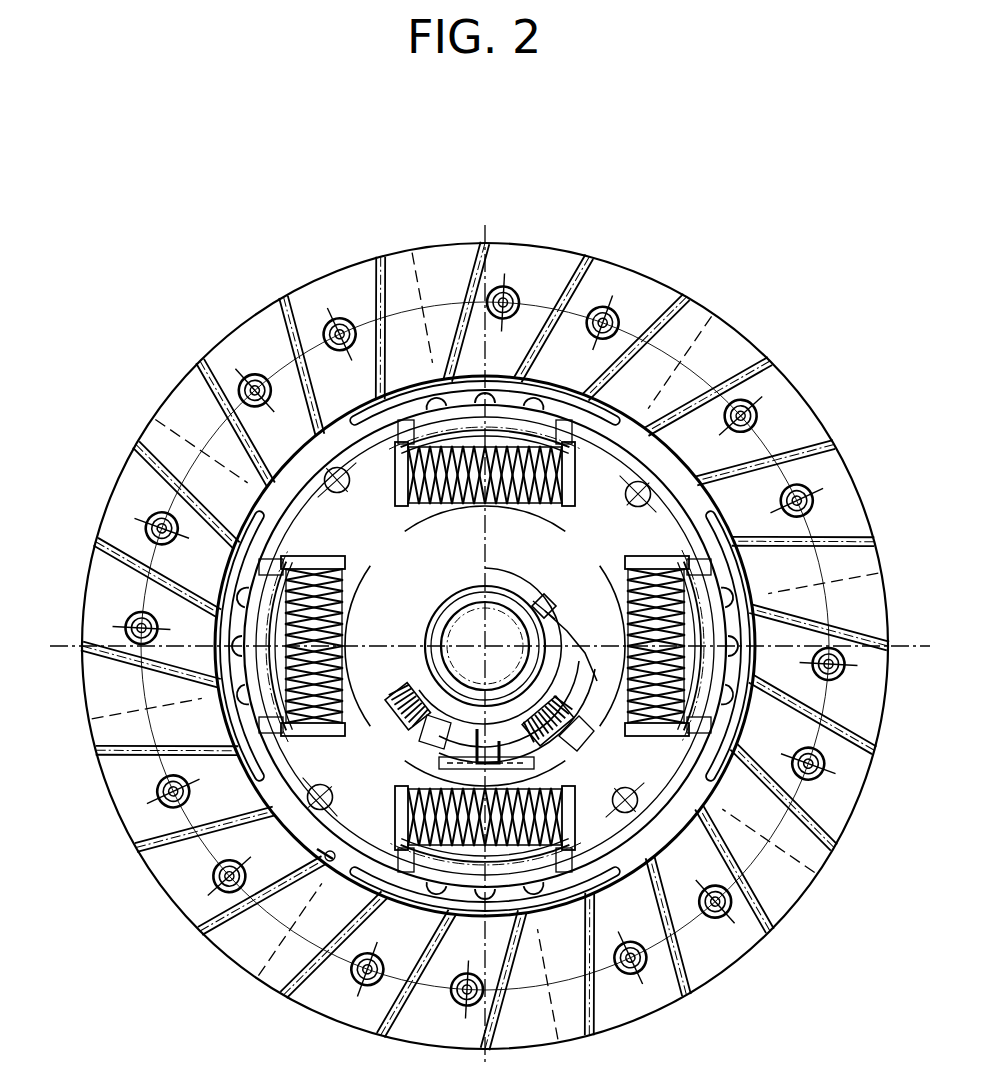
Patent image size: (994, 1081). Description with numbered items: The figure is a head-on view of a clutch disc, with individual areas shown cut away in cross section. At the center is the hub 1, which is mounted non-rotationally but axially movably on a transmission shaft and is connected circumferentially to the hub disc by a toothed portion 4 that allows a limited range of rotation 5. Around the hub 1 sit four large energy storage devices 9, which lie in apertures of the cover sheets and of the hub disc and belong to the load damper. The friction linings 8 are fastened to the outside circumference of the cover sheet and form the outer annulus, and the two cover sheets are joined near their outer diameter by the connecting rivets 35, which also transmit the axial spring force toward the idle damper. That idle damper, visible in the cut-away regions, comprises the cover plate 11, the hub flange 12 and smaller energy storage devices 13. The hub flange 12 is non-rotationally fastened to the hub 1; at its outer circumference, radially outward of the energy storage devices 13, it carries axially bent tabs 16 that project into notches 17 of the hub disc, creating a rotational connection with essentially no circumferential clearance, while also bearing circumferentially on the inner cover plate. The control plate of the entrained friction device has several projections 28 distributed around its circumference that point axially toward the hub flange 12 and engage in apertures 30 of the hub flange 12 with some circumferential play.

The hub 1 is at (458, 606).
The toothed portion 4 is at (554, 594).
The range of rotation 5 is at (540, 603).
The friction linings 8 is at (713, 345).
The energy storage devices 9 is at (528, 842).
The cover plate 11 is at (394, 800).
The hub flange 12 is at (452, 710).
The energy storage devices 13 is at (398, 703).
The tabs 16 is at (615, 822).
The notches 17 is at (477, 763).
The projections 28 is at (718, 735).
The apertures 30 is at (700, 778).
The connecting rivets 35 is at (329, 858).